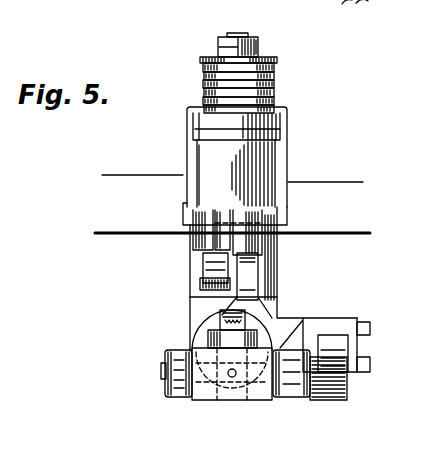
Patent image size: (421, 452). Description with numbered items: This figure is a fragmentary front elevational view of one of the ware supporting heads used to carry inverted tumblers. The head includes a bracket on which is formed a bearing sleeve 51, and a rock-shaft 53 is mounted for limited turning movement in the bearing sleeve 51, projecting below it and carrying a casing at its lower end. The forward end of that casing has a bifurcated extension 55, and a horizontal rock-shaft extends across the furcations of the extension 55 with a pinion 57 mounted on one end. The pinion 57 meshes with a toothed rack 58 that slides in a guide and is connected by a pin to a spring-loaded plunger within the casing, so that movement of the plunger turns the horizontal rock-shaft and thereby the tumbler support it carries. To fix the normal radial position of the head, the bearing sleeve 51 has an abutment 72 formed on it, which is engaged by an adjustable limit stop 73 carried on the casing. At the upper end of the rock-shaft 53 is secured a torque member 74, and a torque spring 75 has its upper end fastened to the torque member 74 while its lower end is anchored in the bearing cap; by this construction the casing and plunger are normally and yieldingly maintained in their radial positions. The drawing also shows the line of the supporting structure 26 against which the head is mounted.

The panel / mounting plate 26 is at (323, 187).
The bearing sleeve 51 is at (215, 163).
The rock-shaft 53 is at (233, 33).
The bifurcated extension 55 is at (193, 349).
The pinion 57 is at (343, 397).
The toothed rack 58 is at (332, 342).
The abutment 72 is at (218, 268).
The adjustable limit stop 73 is at (247, 273).
The torque member 74 is at (257, 54).
The torque spring 75 is at (275, 82).